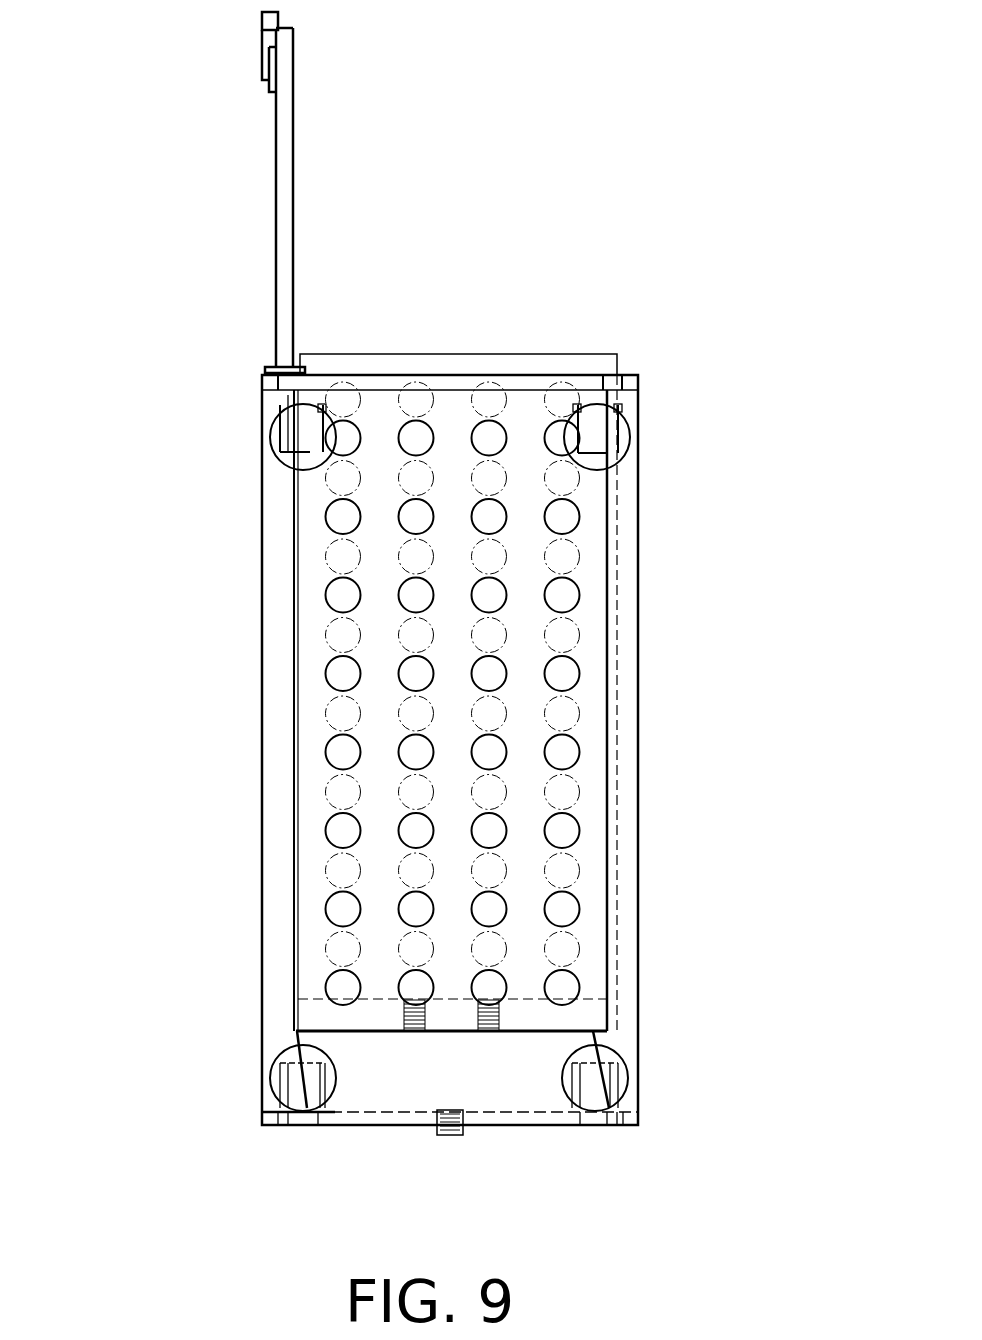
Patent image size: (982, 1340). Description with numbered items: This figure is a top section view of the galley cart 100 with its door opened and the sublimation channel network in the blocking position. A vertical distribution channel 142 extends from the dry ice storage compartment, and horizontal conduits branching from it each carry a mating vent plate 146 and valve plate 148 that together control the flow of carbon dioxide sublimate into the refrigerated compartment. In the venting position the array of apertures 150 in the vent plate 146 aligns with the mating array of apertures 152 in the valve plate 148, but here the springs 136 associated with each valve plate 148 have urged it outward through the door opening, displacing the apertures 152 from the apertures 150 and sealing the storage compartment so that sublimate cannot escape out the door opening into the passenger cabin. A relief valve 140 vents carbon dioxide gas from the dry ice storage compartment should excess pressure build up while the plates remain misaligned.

The cart 100 is at (262, 760).
The valve plate 148 is at (477, 354).
The apertures in the vent plate 150 is at (562, 596).
The apertures in the valve plate 152 is at (562, 558).
The vent plate 146 is at (590, 717).
The spring 136 is at (490, 1015).
The vertical distribution channel 142 is at (466, 1082).
The relief valve 140 is at (460, 1135).